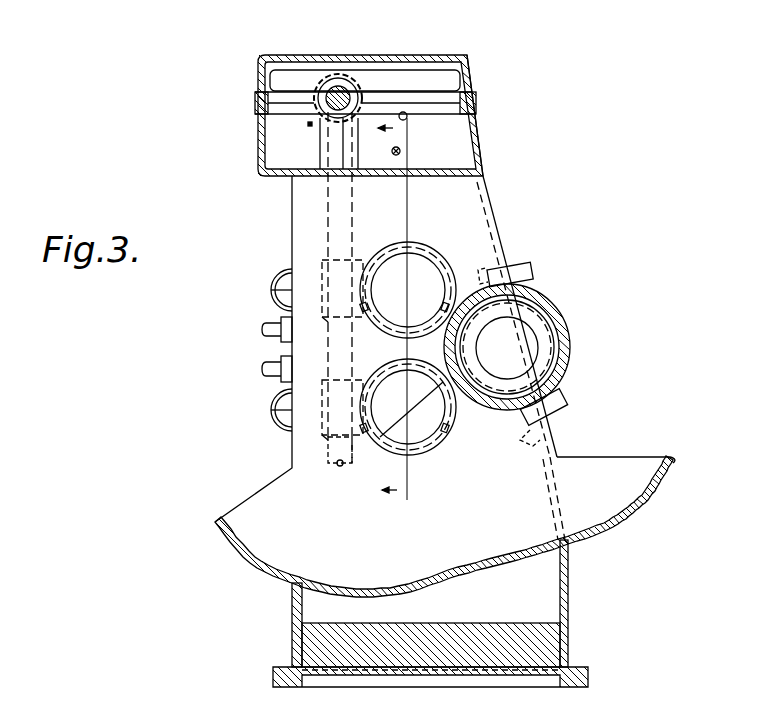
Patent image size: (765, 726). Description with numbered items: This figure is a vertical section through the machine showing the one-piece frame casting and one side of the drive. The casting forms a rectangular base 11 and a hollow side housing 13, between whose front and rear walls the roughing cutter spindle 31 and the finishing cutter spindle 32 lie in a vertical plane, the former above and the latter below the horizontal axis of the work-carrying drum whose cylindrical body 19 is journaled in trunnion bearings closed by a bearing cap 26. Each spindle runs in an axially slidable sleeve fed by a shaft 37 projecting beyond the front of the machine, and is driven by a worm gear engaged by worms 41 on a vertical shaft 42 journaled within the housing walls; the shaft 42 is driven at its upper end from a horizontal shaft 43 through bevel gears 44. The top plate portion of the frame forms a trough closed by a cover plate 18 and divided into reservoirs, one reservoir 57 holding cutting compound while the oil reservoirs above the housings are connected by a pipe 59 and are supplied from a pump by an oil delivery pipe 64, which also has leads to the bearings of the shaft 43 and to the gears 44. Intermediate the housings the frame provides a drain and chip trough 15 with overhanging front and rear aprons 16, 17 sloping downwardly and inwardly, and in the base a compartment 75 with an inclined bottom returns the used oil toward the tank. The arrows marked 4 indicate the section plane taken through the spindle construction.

The section line arrow 4 is at (428, 134).
The rectangular base 11 is at (568, 637).
The side housing 13 is at (292, 259).
The drain and chip trough 15 is at (390, 363).
The front apron 16 is at (253, 536).
The rear apron 17 is at (645, 483).
The cover plate 18 is at (470, 58).
The cylindrical body 19 is at (571, 326).
The bearing cap 26 is at (512, 270).
The roughing cutter spindle 31 is at (382, 320).
The finishing cutter spindle 32 is at (442, 430).
The shaft 37 is at (262, 328).
The worms 41 is at (328, 320).
The vertical shaft 42 is at (374, 215).
The horizontal shaft 43 is at (339, 94).
The bevel gears 44 is at (362, 117).
The reservoir 57 is at (478, 136).
The pipe 59 is at (400, 151).
The oil delivery pipe 64 is at (405, 112).
The compartment 75 is at (430, 603).